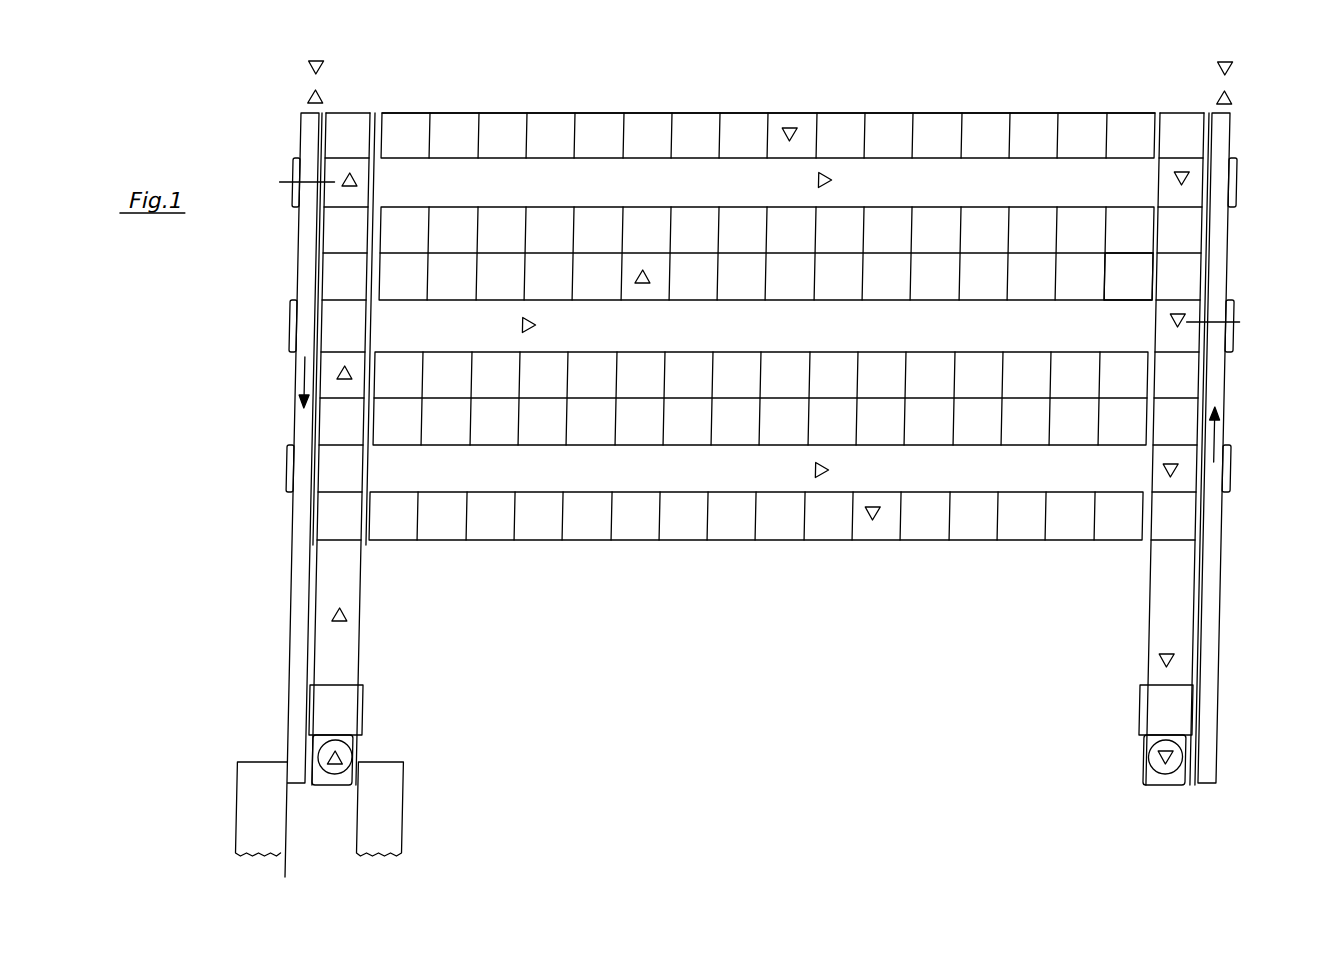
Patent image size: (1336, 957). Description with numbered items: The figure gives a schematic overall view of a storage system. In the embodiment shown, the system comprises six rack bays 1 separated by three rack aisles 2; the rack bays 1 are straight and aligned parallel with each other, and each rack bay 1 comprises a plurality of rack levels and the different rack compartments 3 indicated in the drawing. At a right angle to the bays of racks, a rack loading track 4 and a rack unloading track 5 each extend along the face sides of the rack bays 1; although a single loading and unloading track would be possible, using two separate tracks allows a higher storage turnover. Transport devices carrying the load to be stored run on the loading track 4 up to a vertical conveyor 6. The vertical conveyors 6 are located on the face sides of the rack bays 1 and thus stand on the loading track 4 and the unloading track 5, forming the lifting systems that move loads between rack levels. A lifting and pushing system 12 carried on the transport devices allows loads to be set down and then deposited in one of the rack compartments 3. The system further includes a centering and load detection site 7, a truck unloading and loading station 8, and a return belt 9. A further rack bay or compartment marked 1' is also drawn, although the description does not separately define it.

The rack bay 1 is at (843, 304).
The second load carrier 1' is at (1205, 276).
The rack aisle 2 is at (1135, 190).
The rack compartment 3 is at (847, 130).
The rack loading track 4 is at (352, 587).
The rack unloading track 5 is at (1180, 593).
The vertical conveyor 6 is at (1216, 378).
The centering and load detection site 7 is at (357, 757).
The foundation block 8 is at (267, 797).
The return belt 9 is at (313, 140).
The lifting and pushing system 12 is at (375, 700).